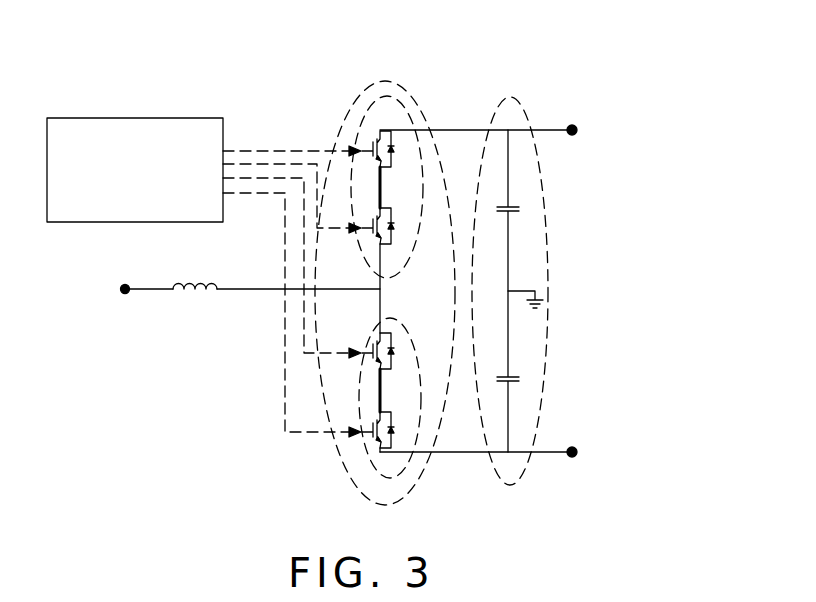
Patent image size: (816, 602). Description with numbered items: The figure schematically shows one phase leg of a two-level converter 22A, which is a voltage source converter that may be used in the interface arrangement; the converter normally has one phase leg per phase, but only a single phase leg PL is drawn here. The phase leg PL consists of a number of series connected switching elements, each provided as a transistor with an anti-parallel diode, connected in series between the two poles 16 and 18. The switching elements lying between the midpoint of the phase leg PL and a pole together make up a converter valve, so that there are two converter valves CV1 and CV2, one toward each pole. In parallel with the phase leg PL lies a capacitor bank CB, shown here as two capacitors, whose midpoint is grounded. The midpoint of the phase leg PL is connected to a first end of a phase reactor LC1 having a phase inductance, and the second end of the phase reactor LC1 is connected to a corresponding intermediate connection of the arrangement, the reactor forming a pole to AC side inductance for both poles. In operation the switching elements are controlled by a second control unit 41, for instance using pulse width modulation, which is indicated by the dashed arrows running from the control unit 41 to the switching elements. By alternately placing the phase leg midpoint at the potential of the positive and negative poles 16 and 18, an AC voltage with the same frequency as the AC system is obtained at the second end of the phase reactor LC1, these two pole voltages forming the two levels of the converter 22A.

The second control unit 41 is at (204, 277).
The phase reactor LC1 is at (251, 306).
The phase leg PL is at (337, 130).
The converter valve CV1 is at (420, 190).
The converter valve CV2 is at (422, 382).
The two-level converter 22A is at (590, 205).
The capacitor bank CB is at (546, 330).
The pole 16 is at (550, 130).
The pole 18 is at (542, 452).